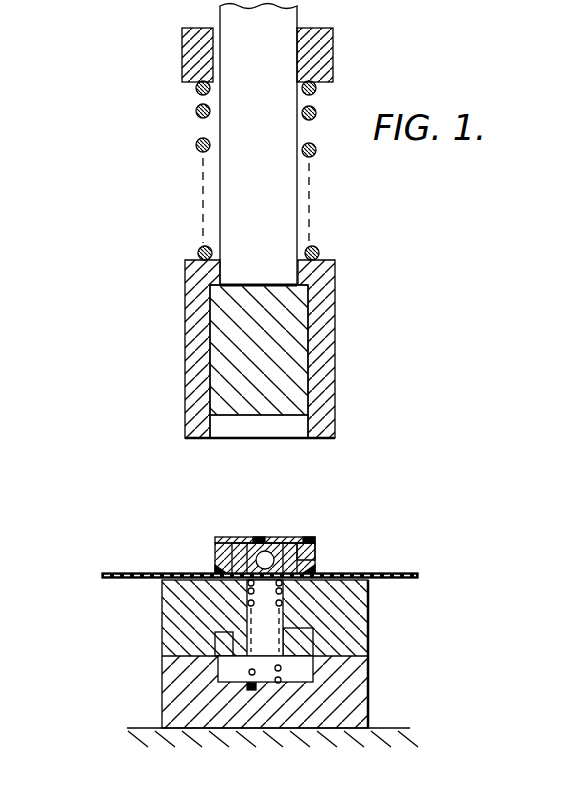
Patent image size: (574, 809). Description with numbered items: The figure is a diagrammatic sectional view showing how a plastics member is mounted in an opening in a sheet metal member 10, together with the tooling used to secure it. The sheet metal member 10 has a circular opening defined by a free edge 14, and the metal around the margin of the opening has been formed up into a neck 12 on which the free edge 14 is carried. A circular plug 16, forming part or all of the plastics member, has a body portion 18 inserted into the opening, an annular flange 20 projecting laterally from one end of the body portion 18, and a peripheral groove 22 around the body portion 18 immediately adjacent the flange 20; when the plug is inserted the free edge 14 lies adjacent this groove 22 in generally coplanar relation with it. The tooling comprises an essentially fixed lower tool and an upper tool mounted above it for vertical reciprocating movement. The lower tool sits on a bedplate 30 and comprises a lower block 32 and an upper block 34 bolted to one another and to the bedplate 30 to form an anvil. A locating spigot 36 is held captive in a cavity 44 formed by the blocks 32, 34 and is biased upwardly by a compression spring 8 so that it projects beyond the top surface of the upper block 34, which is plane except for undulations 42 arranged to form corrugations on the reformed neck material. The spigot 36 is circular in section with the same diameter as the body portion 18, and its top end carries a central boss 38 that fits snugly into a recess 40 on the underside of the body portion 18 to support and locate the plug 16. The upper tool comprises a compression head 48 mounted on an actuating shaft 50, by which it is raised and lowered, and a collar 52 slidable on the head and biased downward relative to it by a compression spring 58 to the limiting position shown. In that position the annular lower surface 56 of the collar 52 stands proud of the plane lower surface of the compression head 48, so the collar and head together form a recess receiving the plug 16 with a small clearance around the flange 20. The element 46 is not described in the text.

The compression spring 8 is at (258, 686).
The sheet metal member 10 is at (130, 573).
The neck 12 is at (222, 572).
The free edge 14 is at (233, 570).
The plug 16 is at (243, 538).
The body portion 18 is at (256, 537).
The annular flange 20 is at (313, 540).
The peripheral groove 22 is at (307, 550).
The bedplate 30 is at (367, 712).
The lower block 32 is at (363, 682).
The upper block 34 is at (360, 641).
The locating spigot 36 is at (370, 612).
The central boss 38 is at (304, 574).
The recess 40 is at (278, 537).
The undulations 42 is at (217, 583).
The cavity 44 is at (228, 662).
The spacer 46 is at (223, 644).
The compression head 48 is at (228, 378).
The actuating shaft 50 is at (222, 279).
The collar 52 is at (230, 270).
The annular lower surface 56 is at (335, 438).
The compression spring 58 is at (199, 145).